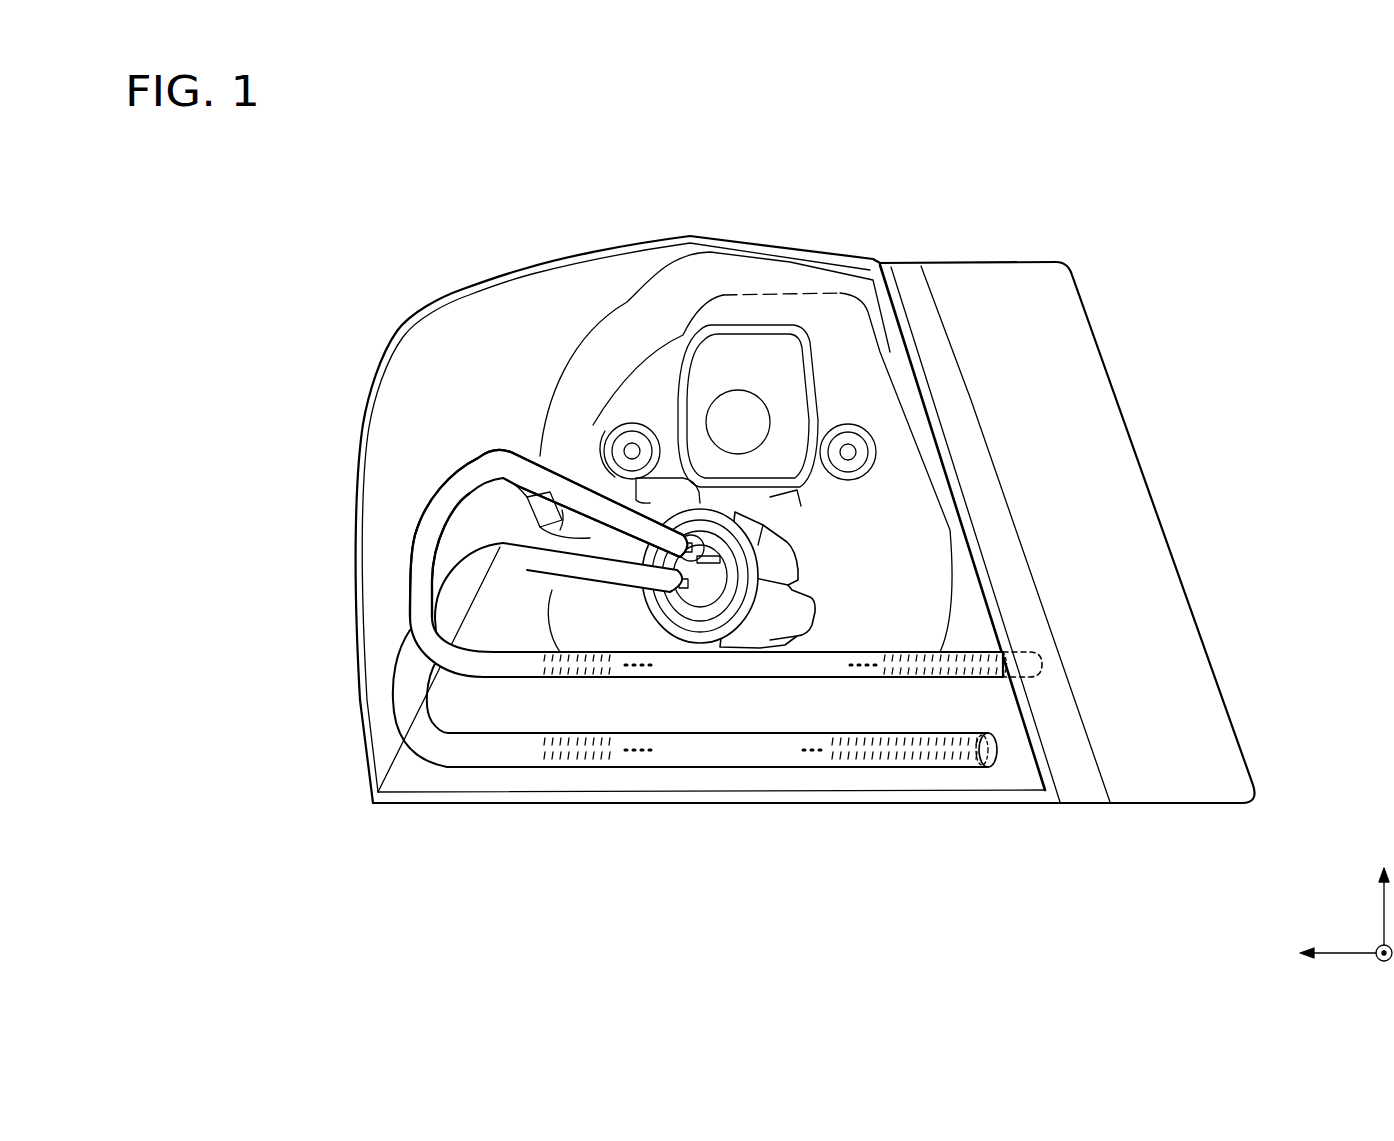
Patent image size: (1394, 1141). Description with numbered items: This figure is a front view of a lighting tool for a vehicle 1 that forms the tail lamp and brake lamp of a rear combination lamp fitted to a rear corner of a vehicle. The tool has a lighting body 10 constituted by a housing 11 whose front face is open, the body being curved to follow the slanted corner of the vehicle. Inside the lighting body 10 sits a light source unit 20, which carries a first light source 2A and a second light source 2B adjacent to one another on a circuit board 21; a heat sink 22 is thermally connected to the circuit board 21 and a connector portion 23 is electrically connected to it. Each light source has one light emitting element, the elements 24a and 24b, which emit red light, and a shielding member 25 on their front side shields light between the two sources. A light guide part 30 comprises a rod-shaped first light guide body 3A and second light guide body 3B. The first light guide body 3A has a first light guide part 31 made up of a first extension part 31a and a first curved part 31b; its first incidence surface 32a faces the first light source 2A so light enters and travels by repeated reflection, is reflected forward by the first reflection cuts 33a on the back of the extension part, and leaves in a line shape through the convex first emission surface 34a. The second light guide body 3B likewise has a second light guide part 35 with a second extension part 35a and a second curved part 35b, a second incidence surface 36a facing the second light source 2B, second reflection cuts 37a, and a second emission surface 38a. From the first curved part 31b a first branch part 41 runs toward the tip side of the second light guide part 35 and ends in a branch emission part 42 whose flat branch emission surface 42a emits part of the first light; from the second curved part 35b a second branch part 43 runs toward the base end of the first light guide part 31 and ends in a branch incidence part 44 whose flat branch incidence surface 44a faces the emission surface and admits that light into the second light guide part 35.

The lighting tool for a vehicle 1 is at (268, 189).
The lighting body 10 is at (805, 462).
The housing 11 is at (761, 239).
The light source unit 20 is at (927, 561).
The circuit board 21 is at (693, 547).
The heat sink 22 is at (808, 611).
The connector portion 23 is at (721, 548).
The light emitting element 24a is at (694, 588).
The first light source 2A is at (759, 765).
The light emitting element 24b is at (703, 544).
The second light source 2B is at (841, 379).
The shielding member 25 is at (779, 735).
The light guide part 30 is at (777, 571).
The first light guide body 3A is at (777, 766).
The second light guide body 3B is at (763, 571).
The first light guide part 31 is at (777, 766).
The first extension part 31a is at (613, 767).
The first curved part 31b is at (403, 652).
The first incidence surface 32a is at (684, 589).
The first reflection cuts 33a is at (1000, 750).
The first emission surface 34a is at (820, 759).
The second light guide part 35 is at (763, 571).
The second extension part 35a is at (558, 678).
The second curved part 35b is at (428, 503).
The second incidence surface 36a is at (692, 530).
The second reflection cuts 37a is at (1042, 663).
The second emission surface 38a is at (870, 669).
The first branch part 41 is at (553, 497).
The branch emission part 42 is at (486, 360).
The branch emission surface 42a is at (516, 457).
The second branch part 43 is at (470, 466).
The branch incidence part 44 is at (556, 341).
The branch incidence surface 44a is at (552, 473).